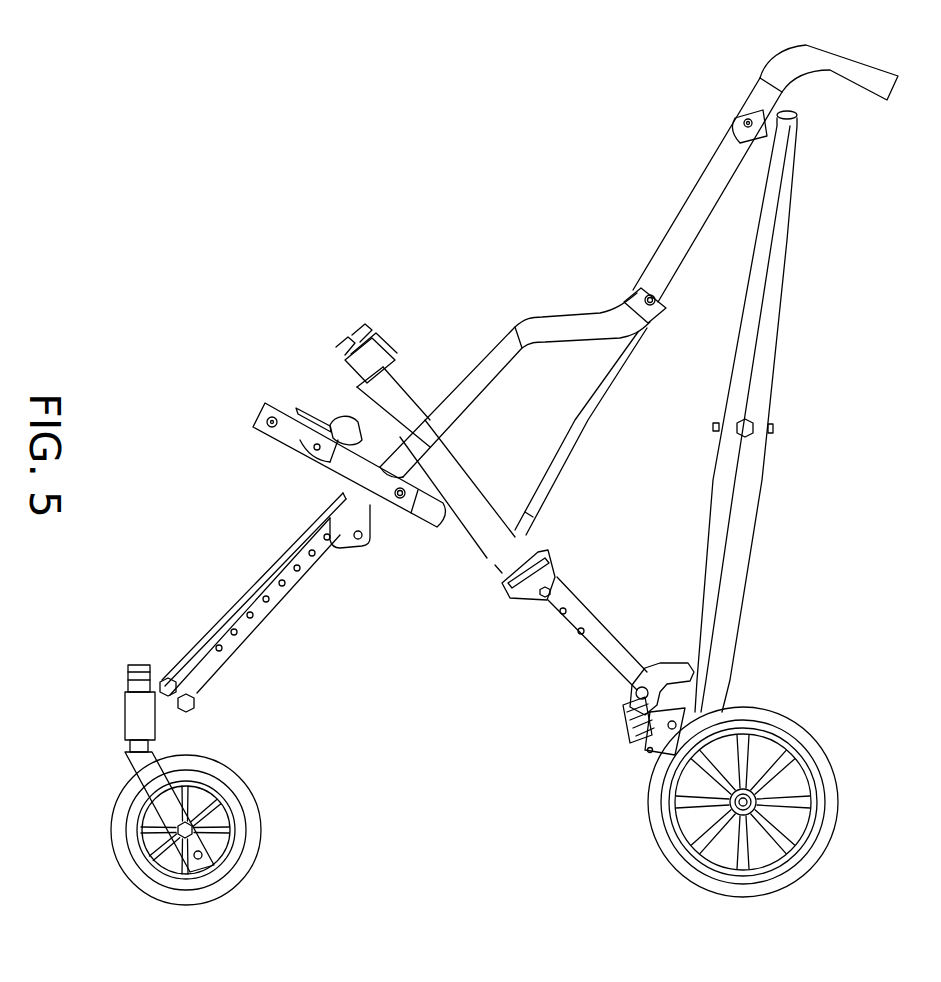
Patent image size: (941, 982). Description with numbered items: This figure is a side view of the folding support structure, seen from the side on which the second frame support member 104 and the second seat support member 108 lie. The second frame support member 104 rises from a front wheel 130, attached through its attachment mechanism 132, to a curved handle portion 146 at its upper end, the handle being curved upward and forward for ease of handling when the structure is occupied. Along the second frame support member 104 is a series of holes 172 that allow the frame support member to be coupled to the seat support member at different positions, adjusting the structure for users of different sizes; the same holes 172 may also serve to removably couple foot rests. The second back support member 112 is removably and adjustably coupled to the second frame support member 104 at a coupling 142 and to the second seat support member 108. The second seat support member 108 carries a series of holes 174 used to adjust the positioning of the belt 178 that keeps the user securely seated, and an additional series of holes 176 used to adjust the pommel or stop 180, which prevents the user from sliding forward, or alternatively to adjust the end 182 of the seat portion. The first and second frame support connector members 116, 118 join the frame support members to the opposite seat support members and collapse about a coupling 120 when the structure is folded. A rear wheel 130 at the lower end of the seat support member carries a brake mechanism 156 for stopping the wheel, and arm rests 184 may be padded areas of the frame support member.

The second frame support member 104 is at (720, 157).
The curved handle portion 146 is at (858, 72).
The second frame support connector member 118 is at (777, 158).
The first frame support connector member 116 is at (768, 368).
The coupling 120 is at (752, 422).
The coupling 142 is at (640, 290).
The second back support member 112 is at (608, 358).
The arm rest 184 is at (607, 318).
The second seat support member 108 is at (298, 420).
The end of the seat portion 182 is at (262, 403).
The pommel or stop 180 is at (340, 412).
The belt 178 is at (407, 402).
The additional series of holes 176 is at (318, 450).
The series of holes 172 is at (282, 585).
The series of holes 174 is at (565, 600).
The brake mechanism 156 is at (677, 673).
The wheel 130 is at (823, 758).
The attachment mechanism 132 is at (138, 670).